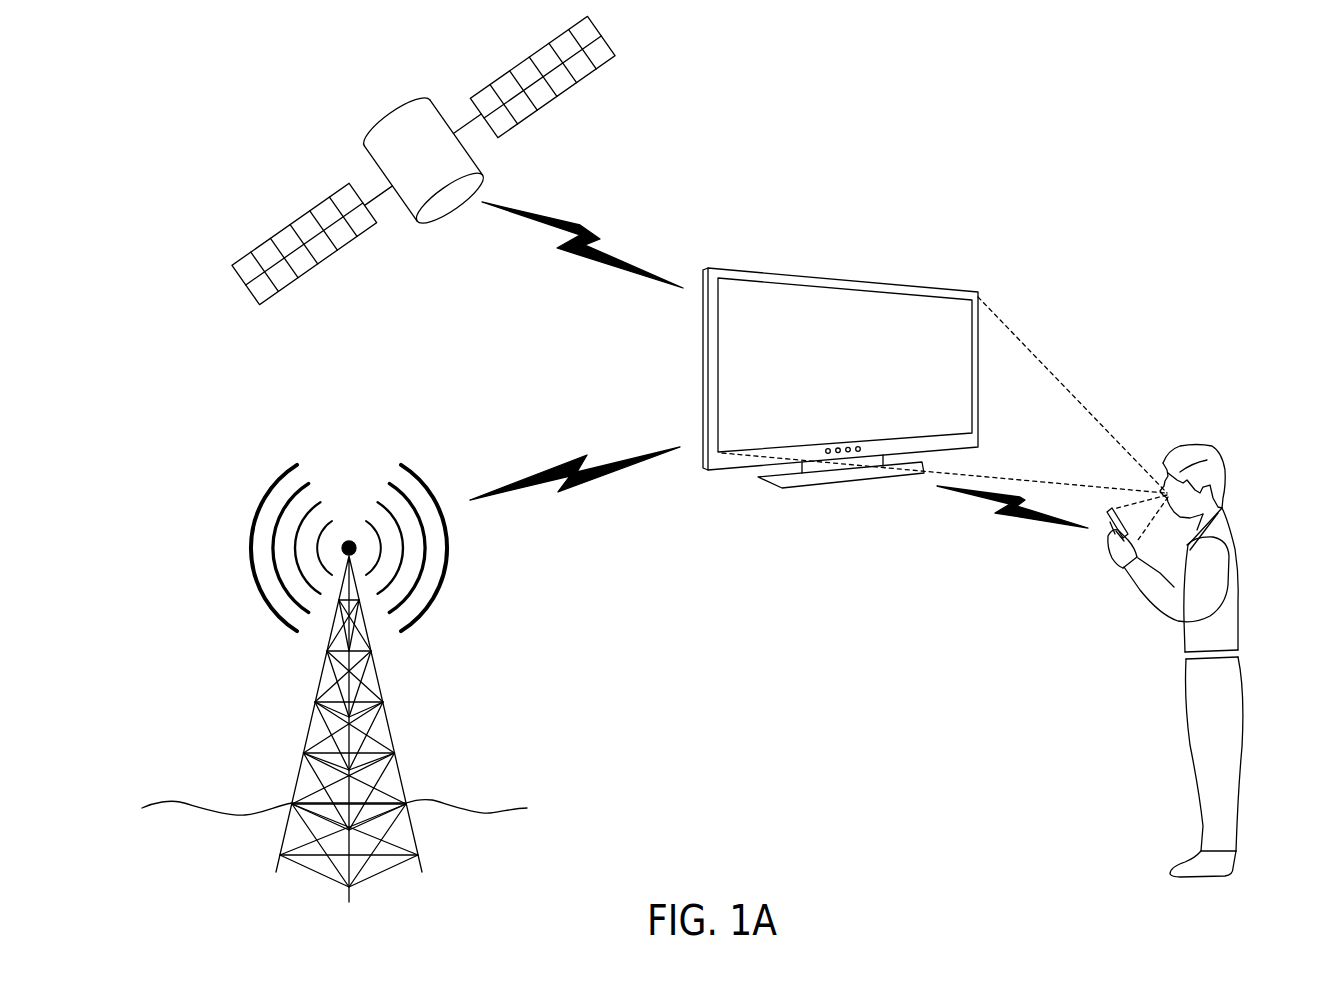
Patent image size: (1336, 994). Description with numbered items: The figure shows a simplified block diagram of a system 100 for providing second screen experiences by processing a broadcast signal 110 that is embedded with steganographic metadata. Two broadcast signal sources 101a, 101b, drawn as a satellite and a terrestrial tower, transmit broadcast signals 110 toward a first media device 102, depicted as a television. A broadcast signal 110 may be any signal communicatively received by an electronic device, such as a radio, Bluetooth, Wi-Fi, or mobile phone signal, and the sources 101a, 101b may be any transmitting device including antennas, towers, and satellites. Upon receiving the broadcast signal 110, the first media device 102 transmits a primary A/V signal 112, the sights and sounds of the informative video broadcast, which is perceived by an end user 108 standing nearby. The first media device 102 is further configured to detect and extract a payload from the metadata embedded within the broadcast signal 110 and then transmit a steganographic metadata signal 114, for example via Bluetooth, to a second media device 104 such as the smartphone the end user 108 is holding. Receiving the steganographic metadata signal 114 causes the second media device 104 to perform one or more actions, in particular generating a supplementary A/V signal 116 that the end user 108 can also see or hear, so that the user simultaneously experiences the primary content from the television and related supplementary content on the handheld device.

The system 100 is at (213, 88).
The broadcast signal source 101a is at (448, 168).
The broadcast signal source 101b is at (320, 688).
The first media device 102 is at (853, 278).
The second media device 104 is at (1112, 537).
The end user 108 is at (1222, 438).
The broadcast signal 110 is at (596, 232).
The primary A/V signal 112 is at (1068, 384).
The steganographic metadata signal 114 is at (1002, 517).
The supplementary A/V signal 116 is at (1127, 506).